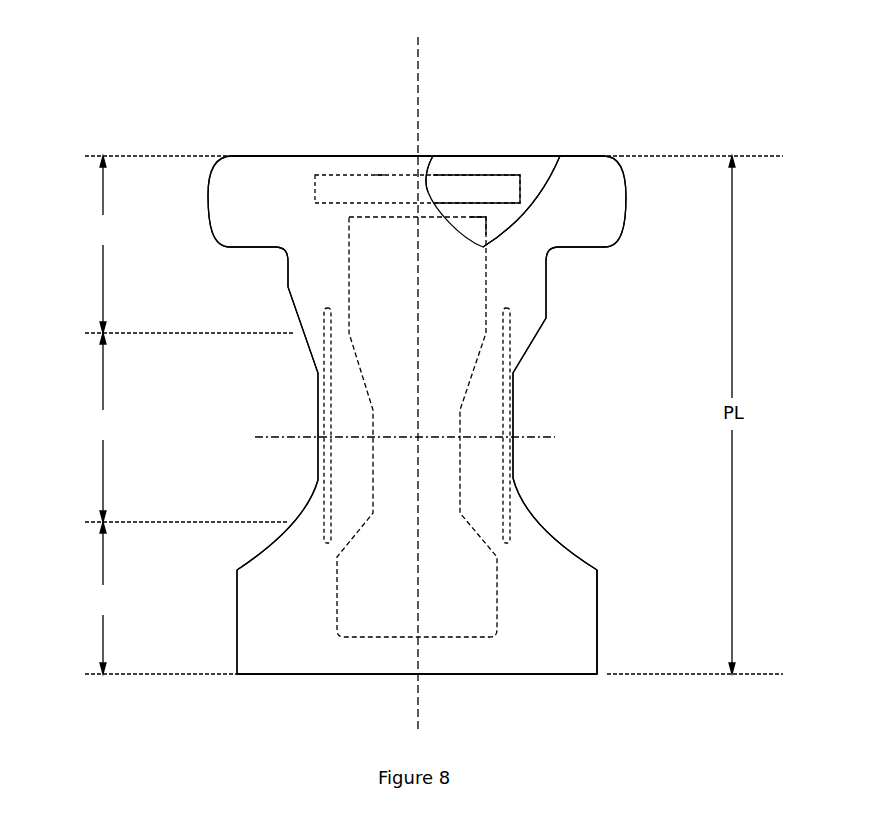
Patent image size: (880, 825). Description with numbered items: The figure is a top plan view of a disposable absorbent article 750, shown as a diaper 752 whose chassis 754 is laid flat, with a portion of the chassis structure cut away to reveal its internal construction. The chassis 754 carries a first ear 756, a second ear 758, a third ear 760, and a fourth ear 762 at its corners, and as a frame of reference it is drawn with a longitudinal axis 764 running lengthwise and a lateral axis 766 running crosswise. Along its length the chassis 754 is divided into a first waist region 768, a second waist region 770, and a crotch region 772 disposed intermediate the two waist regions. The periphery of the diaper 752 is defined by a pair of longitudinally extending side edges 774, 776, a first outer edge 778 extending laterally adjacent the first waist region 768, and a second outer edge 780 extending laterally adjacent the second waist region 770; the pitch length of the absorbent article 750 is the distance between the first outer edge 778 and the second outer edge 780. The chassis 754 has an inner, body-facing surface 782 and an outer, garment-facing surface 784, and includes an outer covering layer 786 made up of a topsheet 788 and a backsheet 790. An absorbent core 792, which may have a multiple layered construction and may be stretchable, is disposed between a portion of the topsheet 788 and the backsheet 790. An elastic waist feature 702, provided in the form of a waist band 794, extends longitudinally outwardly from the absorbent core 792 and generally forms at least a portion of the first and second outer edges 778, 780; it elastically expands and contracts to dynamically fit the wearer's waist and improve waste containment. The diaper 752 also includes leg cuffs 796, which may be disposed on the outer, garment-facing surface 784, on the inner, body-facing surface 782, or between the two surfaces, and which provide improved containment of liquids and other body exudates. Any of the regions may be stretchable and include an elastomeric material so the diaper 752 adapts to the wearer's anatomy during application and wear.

The elastic waist feature 702 is at (445, 187).
The absorbent article 750 is at (478, 118).
The diaper 752 is at (280, 96).
The chassis 754 is at (285, 178).
The first ear 756 is at (580, 240).
The second ear 758 is at (222, 200).
The third ear 760 is at (558, 592).
The fourth ear 762 is at (255, 622).
The longitudinal axis 764 is at (418, 720).
The lateral axis 766 is at (553, 437).
The first waist region 768 is at (348, 244).
The second waist region 770 is at (157, 598).
The crotch region 772 is at (182, 427).
The side edge 774 is at (540, 320).
The side edge 776 is at (288, 285).
The first outer edge 778 is at (357, 157).
The second outer edge 780 is at (315, 674).
The inner, body-facing surface 782 is at (240, 228).
The outer, garment-facing surface 784 is at (545, 170).
The outer covering layer 786 is at (532, 563).
The topsheet 788 is at (280, 562).
The backsheet 790 is at (513, 165).
The absorbent core 792 is at (483, 247).
The waist band 794 is at (380, 183).
The leg cuffs 796 is at (320, 392).